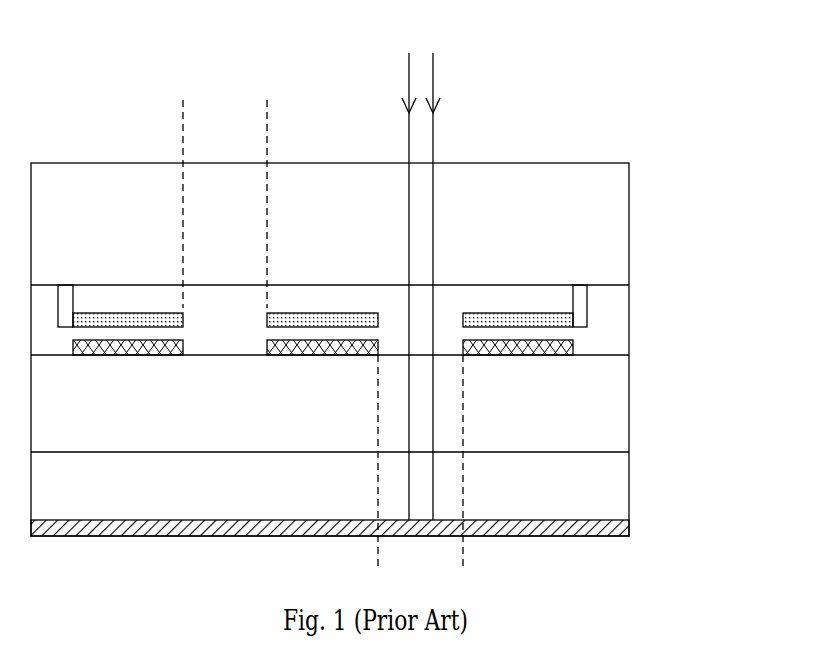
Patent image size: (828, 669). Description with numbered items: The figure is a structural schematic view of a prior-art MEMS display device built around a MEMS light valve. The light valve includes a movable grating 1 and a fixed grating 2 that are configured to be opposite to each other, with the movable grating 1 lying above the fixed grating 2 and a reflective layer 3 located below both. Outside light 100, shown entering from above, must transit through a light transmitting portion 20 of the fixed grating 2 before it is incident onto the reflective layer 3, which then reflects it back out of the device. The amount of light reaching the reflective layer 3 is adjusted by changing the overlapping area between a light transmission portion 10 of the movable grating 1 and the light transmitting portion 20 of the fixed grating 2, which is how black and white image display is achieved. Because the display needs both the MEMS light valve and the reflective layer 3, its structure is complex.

The movable grating 1 is at (557, 322).
The fixed grating 2 is at (560, 348).
The reflective layer 3 is at (617, 528).
The light transmission portion 10 is at (183, 107).
The light transmitting portion 20 is at (378, 562).
The outside light 100 is at (450, 50).